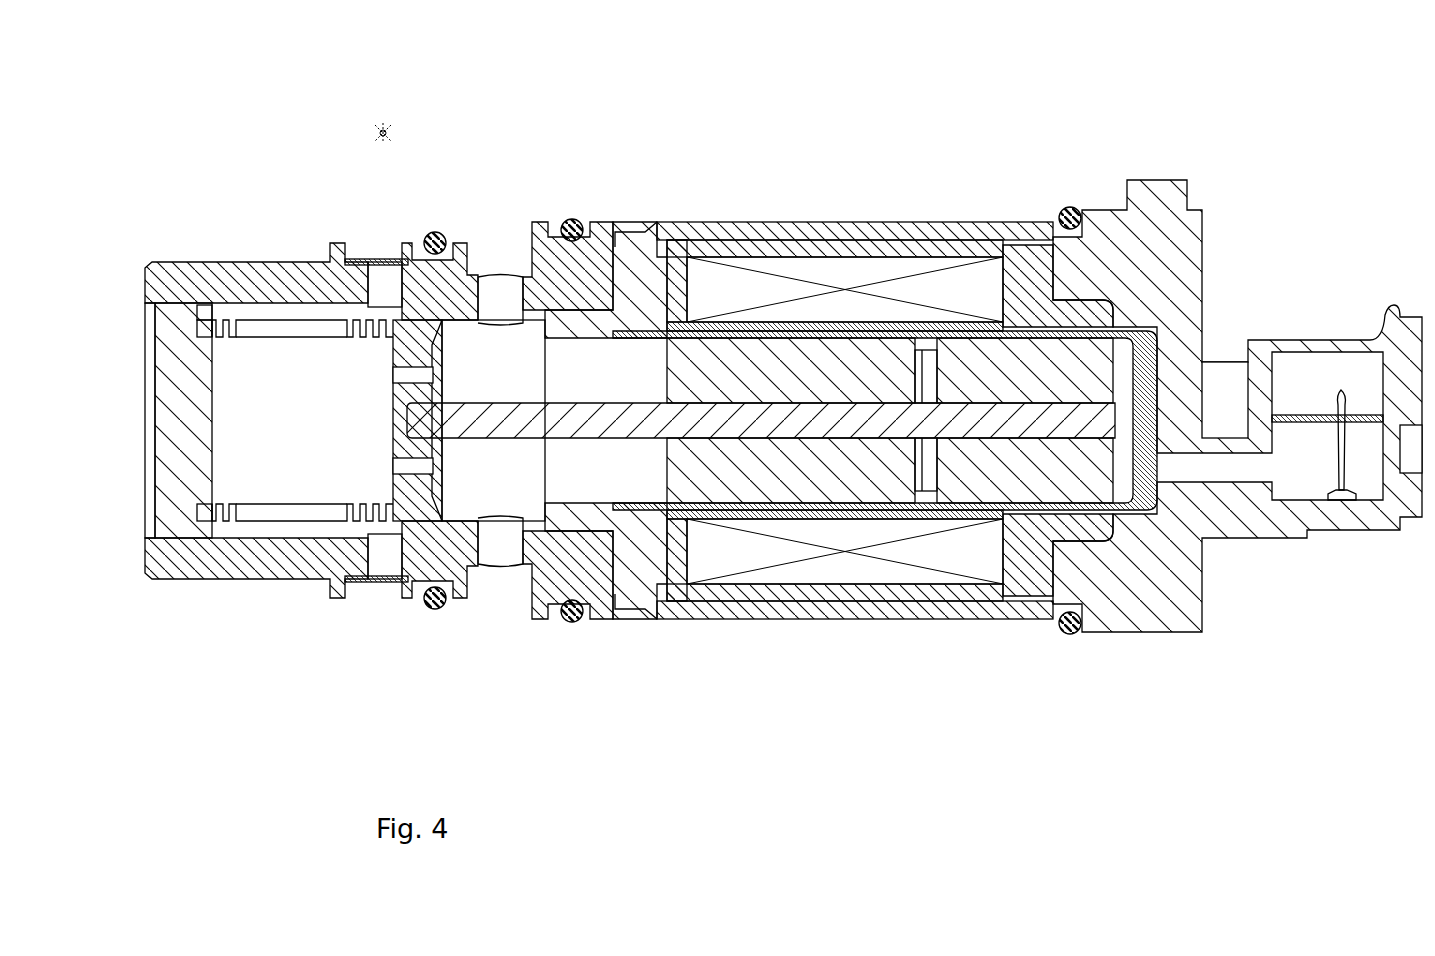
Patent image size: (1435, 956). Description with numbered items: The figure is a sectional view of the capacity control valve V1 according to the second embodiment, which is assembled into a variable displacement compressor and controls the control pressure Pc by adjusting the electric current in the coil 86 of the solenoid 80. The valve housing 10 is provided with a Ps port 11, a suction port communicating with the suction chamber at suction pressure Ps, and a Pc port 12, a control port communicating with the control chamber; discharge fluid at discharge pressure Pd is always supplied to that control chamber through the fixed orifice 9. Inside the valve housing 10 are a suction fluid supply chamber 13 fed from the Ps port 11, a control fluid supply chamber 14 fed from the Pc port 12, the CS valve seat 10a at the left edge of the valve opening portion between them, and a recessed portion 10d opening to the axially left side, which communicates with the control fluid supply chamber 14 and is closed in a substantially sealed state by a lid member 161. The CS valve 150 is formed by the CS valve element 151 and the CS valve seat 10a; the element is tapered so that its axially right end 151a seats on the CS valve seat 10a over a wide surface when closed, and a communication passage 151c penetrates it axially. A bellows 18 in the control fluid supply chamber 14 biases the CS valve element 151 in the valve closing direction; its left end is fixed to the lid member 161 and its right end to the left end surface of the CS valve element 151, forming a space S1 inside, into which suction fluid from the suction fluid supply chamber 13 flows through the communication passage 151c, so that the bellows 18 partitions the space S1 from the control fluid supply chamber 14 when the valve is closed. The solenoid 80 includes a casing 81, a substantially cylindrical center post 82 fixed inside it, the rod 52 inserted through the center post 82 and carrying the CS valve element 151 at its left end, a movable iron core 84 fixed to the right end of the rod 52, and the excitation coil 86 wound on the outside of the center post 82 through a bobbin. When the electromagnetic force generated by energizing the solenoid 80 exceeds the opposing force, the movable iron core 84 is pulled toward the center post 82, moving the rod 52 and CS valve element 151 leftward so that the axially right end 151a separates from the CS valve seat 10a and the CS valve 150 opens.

The fixed orifice 9 is at (377, 133).
The discharge pressure Pd is at (383, 262).
The control pressure Pc is at (385, 239).
The suction pressure Ps is at (503, 277).
The valve housing 10 is at (168, 252).
The CS valve seat 10a is at (397, 545).
The recessed portion 10d is at (215, 310).
The Ps port 11 is at (522, 285).
The Pc port 12 is at (373, 258).
The suction fluid supply chamber 13 is at (548, 610).
The control fluid supply chamber 14 is at (315, 525).
The bellows 18 is at (223, 527).
The space S1 is at (293, 430).
The rod 52 is at (688, 417).
The solenoid 80 is at (878, 409).
The casing 81 is at (605, 642).
The center post 82 is at (847, 315).
The movable iron core 84 is at (1000, 470).
The coil 86 is at (863, 567).
The CS valve 150 is at (377, 450).
The CS valve element 151 is at (410, 262).
The axially right end 151a is at (437, 600).
The communication passage 151c is at (393, 388).
The lid member 161 is at (172, 447).
The capacity control valve V1 is at (1224, 122).